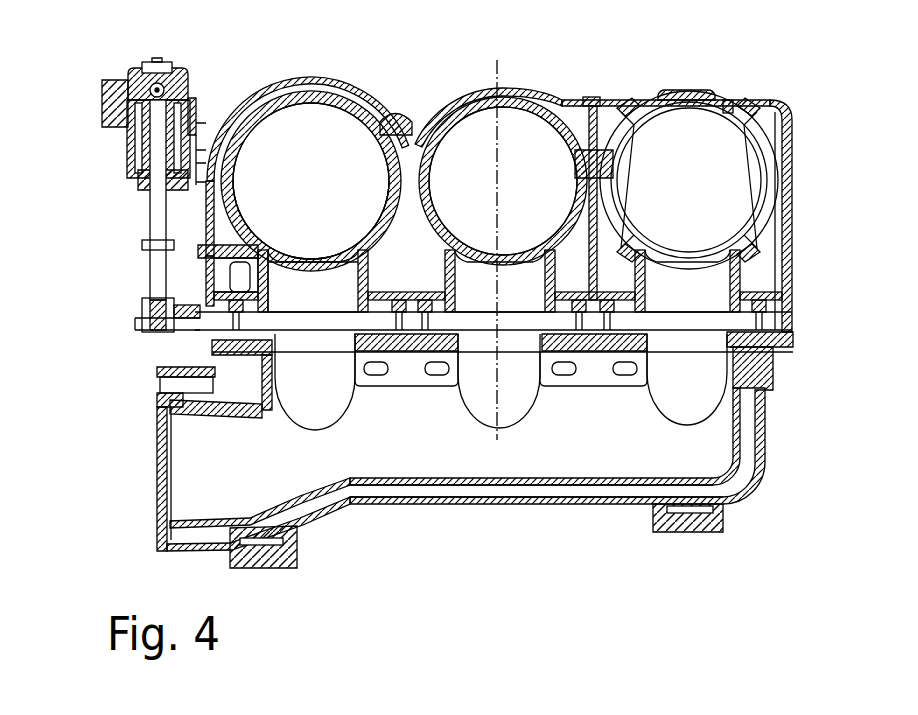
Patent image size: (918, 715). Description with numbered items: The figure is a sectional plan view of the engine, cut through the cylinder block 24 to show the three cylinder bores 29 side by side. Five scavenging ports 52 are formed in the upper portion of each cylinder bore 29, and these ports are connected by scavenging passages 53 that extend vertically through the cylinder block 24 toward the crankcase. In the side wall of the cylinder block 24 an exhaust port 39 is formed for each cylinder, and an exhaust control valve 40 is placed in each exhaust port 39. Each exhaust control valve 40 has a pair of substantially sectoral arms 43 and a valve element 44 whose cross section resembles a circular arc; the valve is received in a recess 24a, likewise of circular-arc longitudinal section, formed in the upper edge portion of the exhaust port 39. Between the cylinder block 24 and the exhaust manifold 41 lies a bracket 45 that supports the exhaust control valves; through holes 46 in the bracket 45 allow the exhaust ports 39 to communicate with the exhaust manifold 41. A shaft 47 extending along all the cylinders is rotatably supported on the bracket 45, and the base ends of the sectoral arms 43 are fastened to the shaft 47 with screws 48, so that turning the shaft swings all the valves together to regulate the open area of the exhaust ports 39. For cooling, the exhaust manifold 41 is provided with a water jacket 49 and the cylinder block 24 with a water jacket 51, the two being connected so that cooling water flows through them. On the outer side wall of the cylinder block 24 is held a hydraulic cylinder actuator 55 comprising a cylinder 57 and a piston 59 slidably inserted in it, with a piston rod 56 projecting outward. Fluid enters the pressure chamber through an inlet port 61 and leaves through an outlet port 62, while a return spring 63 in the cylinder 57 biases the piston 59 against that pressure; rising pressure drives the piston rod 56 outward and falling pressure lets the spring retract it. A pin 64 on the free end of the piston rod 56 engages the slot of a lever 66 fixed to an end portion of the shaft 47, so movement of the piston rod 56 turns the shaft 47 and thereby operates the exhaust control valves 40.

The cylinder block 24 is at (455, 82).
The recess 24a is at (284, 252).
The cylinder bore 29 is at (295, 166).
The exhaust port 39 is at (319, 310).
The exhaust control valve 40 is at (338, 252).
The exhaust manifold 41 is at (531, 505).
The sectoral arms 43 is at (348, 272).
The valve element 44 is at (313, 257).
The bracket 45 is at (405, 387).
The through holes 46 is at (285, 345).
The shaft 47 is at (474, 332).
The screws 48 is at (584, 302).
The water jacket 49 is at (450, 500).
The water jacket 51 is at (378, 96).
The scavenging ports 52 is at (630, 128).
The scavenging passages 53 is at (618, 110).
The hydraulic cylinder actuator 55 is at (165, 57).
The piston rod 56 is at (150, 258).
The cylinder 57 is at (130, 166).
The piston 59 is at (192, 94).
The inlet port 61 is at (155, 64).
The outlet port 62 is at (166, 80).
The return spring 63 is at (136, 184).
The pin 64 is at (140, 318).
The lever 66 is at (146, 300).